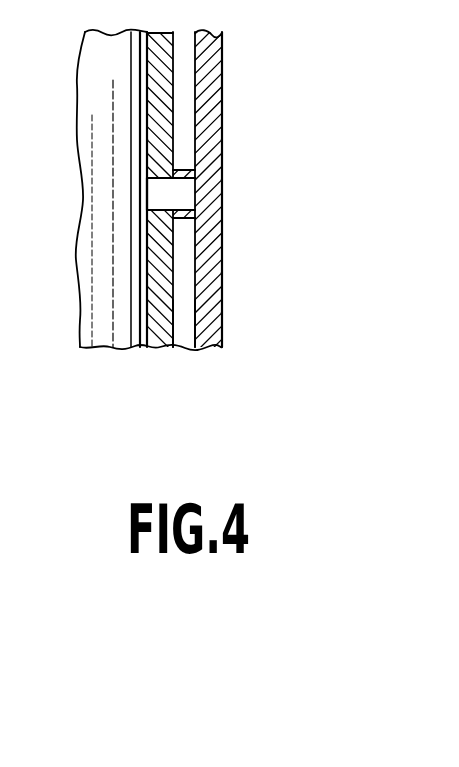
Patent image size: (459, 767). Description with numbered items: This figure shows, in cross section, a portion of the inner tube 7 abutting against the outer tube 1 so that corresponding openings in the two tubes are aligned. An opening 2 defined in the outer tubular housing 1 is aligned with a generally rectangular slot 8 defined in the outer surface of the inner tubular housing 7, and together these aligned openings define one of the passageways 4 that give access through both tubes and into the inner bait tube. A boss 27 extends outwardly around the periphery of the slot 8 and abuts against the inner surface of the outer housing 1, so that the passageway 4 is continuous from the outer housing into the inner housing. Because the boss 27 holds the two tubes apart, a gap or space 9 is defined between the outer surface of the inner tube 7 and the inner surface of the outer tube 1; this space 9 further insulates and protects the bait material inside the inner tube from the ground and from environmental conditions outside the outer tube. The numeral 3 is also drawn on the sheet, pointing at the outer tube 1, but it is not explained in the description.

The outer tube 1 is at (222, 238).
The opening in outer tube 2 is at (212, 198).
The inner wall surface 3 is at (214, 207).
The passageway 4 is at (183, 190).
The inner tube 7 is at (147, 330).
The slot 8 is at (150, 188).
The gap or space 9 is at (187, 338).
The boss 27 is at (192, 214).